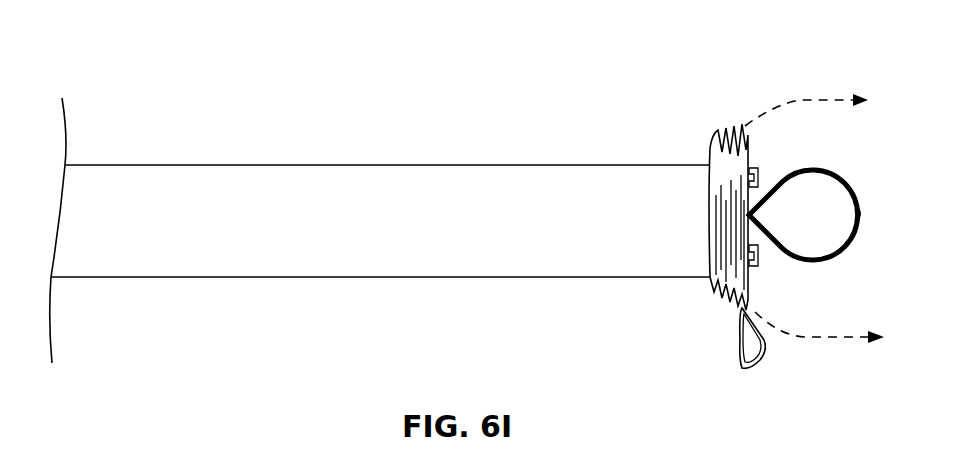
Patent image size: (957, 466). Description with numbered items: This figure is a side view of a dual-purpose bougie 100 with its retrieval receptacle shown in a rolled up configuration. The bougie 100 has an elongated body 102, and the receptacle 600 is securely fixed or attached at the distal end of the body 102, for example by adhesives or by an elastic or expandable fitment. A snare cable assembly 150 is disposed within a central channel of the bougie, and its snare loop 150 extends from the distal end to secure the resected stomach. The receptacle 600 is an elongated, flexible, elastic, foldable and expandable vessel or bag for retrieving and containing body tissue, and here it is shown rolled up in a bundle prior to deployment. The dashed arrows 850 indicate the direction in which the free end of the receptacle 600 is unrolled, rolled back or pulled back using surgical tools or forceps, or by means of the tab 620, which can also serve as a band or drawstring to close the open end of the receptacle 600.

The bougie 100 is at (482, 66).
The body 102 is at (538, 255).
The receptacle 600 is at (710, 148).
The snare cable assembly 150 is at (808, 270).
The tab 620 is at (746, 370).
The arrows 850 is at (790, 98).